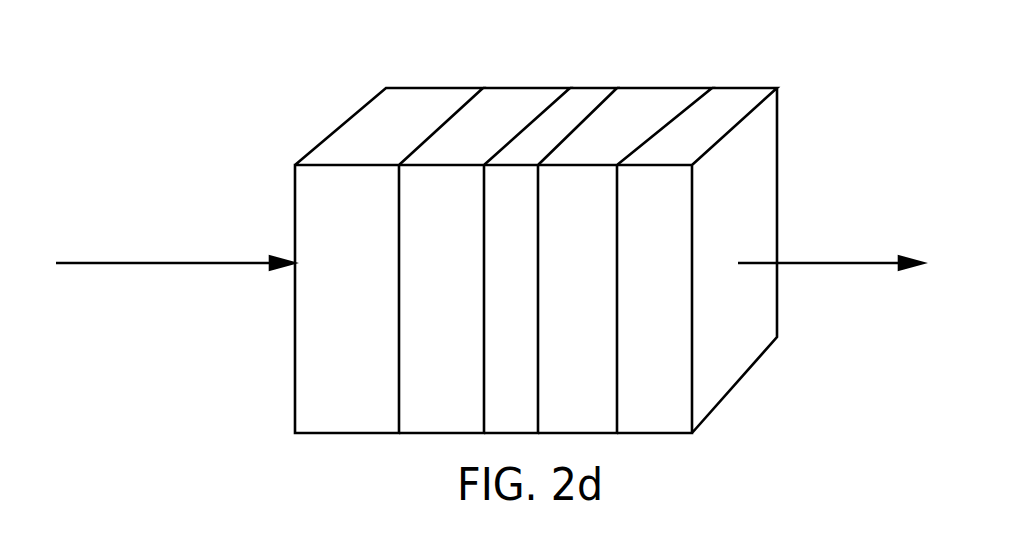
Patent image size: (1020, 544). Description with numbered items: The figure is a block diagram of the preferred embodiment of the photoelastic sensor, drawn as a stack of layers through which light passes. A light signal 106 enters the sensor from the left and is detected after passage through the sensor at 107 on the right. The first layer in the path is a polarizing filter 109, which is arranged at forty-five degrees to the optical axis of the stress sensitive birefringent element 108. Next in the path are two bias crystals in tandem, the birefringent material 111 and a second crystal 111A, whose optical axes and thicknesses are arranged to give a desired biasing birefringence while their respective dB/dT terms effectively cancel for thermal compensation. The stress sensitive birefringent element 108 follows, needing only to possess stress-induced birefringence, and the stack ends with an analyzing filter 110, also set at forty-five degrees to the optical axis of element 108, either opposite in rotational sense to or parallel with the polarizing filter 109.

The light signal 106 is at (142, 263).
The detection point 107 is at (828, 263).
The stress sensitive birefringent element 108 is at (609, 298).
The polarizing filter 109 is at (381, 263).
The analyzing filter 110 is at (685, 298).
The birefringent material 111 is at (475, 310).
The bias crystal 111A is at (513, 215).